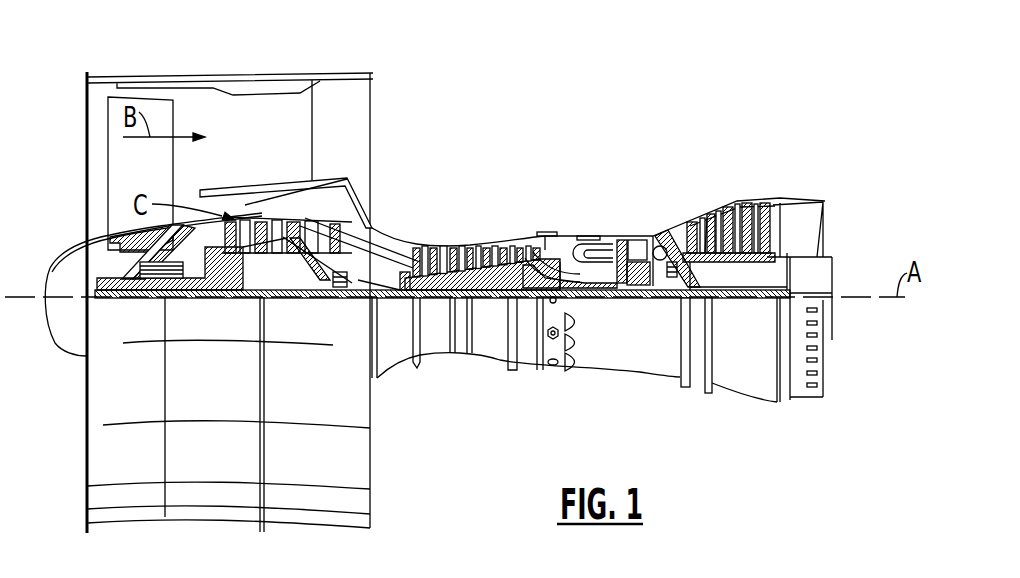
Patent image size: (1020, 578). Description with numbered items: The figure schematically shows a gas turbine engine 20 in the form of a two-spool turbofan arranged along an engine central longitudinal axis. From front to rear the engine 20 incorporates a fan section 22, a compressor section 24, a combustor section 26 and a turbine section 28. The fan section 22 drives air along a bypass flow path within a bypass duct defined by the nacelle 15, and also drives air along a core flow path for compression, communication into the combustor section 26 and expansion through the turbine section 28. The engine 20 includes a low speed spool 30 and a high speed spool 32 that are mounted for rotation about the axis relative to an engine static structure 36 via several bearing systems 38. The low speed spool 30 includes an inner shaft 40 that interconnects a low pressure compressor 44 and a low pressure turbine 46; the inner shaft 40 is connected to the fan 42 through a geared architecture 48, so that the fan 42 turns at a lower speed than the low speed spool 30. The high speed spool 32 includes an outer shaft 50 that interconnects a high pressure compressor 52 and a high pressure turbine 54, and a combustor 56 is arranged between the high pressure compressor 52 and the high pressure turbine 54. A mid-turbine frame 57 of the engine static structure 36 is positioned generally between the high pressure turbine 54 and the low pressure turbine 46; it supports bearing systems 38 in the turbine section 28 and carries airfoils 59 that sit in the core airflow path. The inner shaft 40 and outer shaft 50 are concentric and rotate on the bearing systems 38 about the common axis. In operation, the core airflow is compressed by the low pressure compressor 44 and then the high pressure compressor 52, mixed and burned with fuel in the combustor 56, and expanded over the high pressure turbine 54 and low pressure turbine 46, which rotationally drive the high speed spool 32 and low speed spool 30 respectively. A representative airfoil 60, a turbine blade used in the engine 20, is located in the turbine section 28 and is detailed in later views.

The nacelle 15 is at (230, 78).
The gas turbine engine 20 is at (592, 106).
The fan section 22 is at (173, 66).
The compressor section 24 is at (413, 218).
The combustor section 26 is at (586, 206).
The turbine section 28 is at (720, 183).
The low speed spool 30 is at (493, 308).
The high speed spool 32 is at (527, 260).
The engine static structure 36 is at (525, 375).
The bearing systems 38 is at (341, 297).
The inner shaft 40 is at (383, 297).
The fan 42 is at (158, 177).
The low pressure compressor 44 is at (318, 199).
The low pressure turbine 46 is at (733, 200).
The geared architecture 48 is at (230, 298).
The outer shaft 50 is at (580, 283).
The high pressure compressor 52 is at (480, 245).
The high pressure turbine 54 is at (656, 240).
The combustor 56 is at (583, 250).
The mid-turbine frame 57 is at (673, 218).
The airfoils 59 is at (690, 265).
The airfoil 60 is at (707, 218).